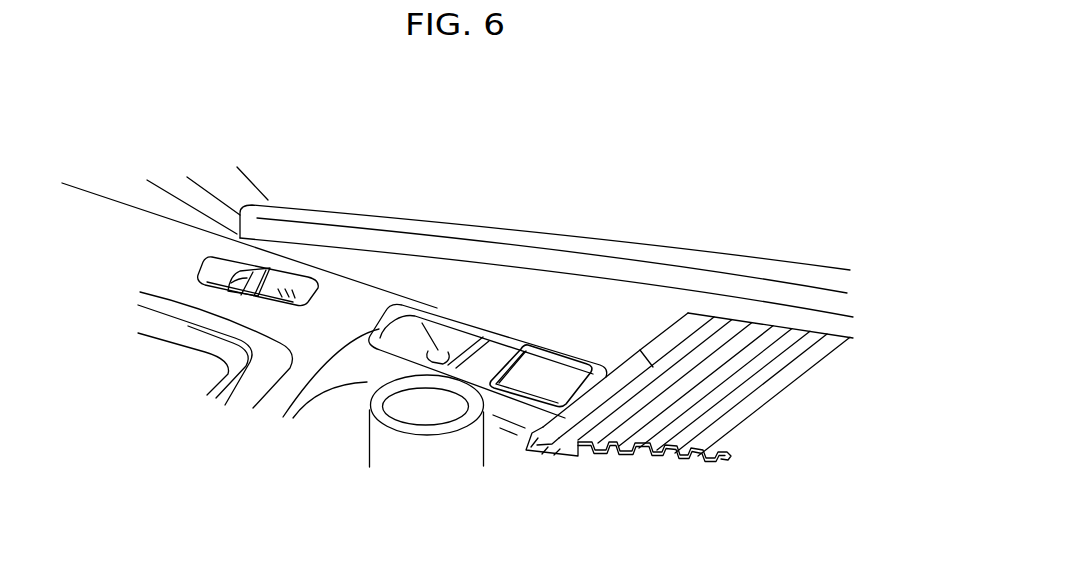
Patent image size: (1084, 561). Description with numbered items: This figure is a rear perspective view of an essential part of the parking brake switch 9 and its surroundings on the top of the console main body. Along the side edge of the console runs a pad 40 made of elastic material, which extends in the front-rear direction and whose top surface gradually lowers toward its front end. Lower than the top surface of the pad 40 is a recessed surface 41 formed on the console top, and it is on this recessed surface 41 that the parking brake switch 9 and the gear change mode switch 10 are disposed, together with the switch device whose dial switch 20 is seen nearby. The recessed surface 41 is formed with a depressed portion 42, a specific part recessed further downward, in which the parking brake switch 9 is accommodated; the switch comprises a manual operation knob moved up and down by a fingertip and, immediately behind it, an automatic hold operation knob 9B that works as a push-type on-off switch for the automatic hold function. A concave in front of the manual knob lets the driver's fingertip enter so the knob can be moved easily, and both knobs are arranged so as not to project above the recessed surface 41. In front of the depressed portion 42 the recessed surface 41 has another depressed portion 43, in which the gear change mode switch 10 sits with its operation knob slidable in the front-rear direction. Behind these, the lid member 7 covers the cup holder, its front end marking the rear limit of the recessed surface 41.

The lid member 7 is at (688, 427).
The parking brake switch 9 is at (490, 347).
The automatic hold operation knob 9B is at (550, 373).
The gear change mode switch 10 is at (275, 266).
The dial switch 20 is at (380, 440).
The pad 40 is at (612, 305).
The recessed surface 41 is at (353, 305).
The depressed portion 42 is at (440, 327).
The another depressed portion 43 is at (227, 272).